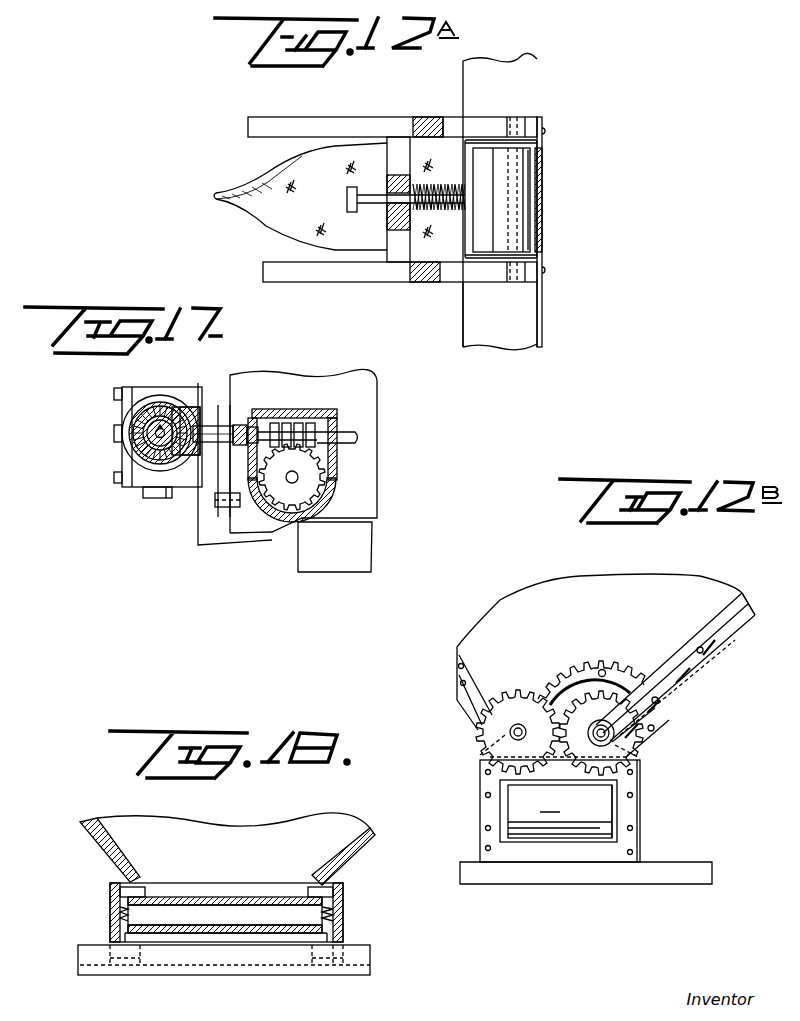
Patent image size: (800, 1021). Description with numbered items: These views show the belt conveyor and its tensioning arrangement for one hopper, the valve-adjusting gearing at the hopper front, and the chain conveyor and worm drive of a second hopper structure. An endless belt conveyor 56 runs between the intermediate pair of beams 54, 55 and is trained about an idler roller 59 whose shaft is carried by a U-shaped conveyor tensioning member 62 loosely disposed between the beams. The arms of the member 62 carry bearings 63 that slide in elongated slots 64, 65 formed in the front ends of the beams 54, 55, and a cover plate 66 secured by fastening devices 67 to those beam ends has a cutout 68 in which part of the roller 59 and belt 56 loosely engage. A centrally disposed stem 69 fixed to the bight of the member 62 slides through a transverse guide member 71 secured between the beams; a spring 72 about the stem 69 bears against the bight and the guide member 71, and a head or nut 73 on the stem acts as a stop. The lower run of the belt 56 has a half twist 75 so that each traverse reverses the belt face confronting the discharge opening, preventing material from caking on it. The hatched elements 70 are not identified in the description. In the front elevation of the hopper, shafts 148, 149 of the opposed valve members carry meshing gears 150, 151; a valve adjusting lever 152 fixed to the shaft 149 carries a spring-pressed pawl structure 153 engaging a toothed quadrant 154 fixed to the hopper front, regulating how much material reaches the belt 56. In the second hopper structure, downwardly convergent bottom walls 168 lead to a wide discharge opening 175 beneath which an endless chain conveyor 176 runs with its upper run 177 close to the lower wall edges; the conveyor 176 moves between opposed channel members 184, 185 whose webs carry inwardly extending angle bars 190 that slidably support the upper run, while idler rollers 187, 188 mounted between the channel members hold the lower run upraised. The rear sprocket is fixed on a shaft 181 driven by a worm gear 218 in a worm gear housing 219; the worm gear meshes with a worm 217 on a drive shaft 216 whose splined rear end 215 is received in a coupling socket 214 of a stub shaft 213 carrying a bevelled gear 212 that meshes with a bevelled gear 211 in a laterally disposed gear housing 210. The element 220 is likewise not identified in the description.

In FIG. 12A, the beam 54 is at (328, 282).
In FIG. 12A, the beam 55 is at (358, 124).
In FIG. 12A, the idler roller 59 is at (520, 214).
In FIG. 12A, the U-shaped conveyor tensioning member 62 is at (478, 260).
In FIG. 12A, the bearings 63 is at (512, 286).
In FIG. 12A, the elongated slot 64 is at (490, 282).
In FIG. 12A, the elongated slot 65 is at (478, 122).
In FIG. 12A, the cover plate 66 is at (545, 138).
In FIG. 12B, the cover plate 66 is at (635, 812).
In FIG. 12A, the fastening devices 67 is at (544, 128).
In FIG. 12B, the fastening devices 67 is at (634, 852).
In FIG. 12B, the cutout or opening 68 is at (530, 845).
In FIG. 12A, the stem 69 is at (371, 205).
In FIG. 12A, the clamp blocks 70 is at (393, 188).
In FIG. 12A, the guide member 71 is at (396, 262).
In FIG. 12A, the spring 72 is at (437, 195).
In FIG. 12A, the head or nut 73 is at (347, 198).
In FIG. 12A, the half twist 75 is at (216, 205).
In FIG. 12B, the endless or belt conveyor 56 is at (523, 805).
In FIG. 12B, the shaft 148 is at (508, 736).
In FIG. 12B, the shaft 149 is at (616, 737).
In FIG. 12B, the gear 150 is at (478, 740).
In FIG. 12B, the gear 151 is at (628, 750).
In FIG. 12B, the valve adjusting lever 152 is at (682, 668).
In FIG. 12B, the spring-pressed pawl structure 153 is at (672, 650).
In FIG. 12B, the toothed quadrant 154 is at (580, 662).
In FIG. 18, the bottom walls 168 is at (376, 840).
In FIG. 18, the discharge opening 175 is at (145, 877).
In FIG. 18, the endless conveyor member 176 is at (214, 897).
In FIG. 18, the upper run 177 is at (263, 897).
In FIG. 17, the shaft 181 is at (295, 485).
In FIG. 18, the channel member 184 is at (345, 912).
In FIG. 18, the channel member 185 is at (110, 930).
In FIG. 18, the idler roller 187 is at (283, 935).
In FIG. 18, the idler roller 188 is at (210, 937).
In FIG. 18, the angle bars 190 is at (333, 880).
In FIG. 17, the gear housing 210 is at (138, 473).
In FIG. 17, the bevelled gear 211 is at (166, 400).
In FIG. 17, the bevelled gear 212 is at (206, 424).
In FIG. 17, the stub shaft 213 is at (226, 428).
In FIG. 17, the coupling socket 214 is at (314, 410).
In FIG. 17, the splined rear end 215 is at (240, 452).
In FIG. 17, the drive shaft 216 is at (342, 434).
In FIG. 17, the worm 217 is at (314, 418).
In FIG. 17, the worm gear 218 is at (282, 497).
In FIG. 17, the worm gear housing 219 is at (335, 483).
In FIG. 17, the bearing 220 is at (212, 508).